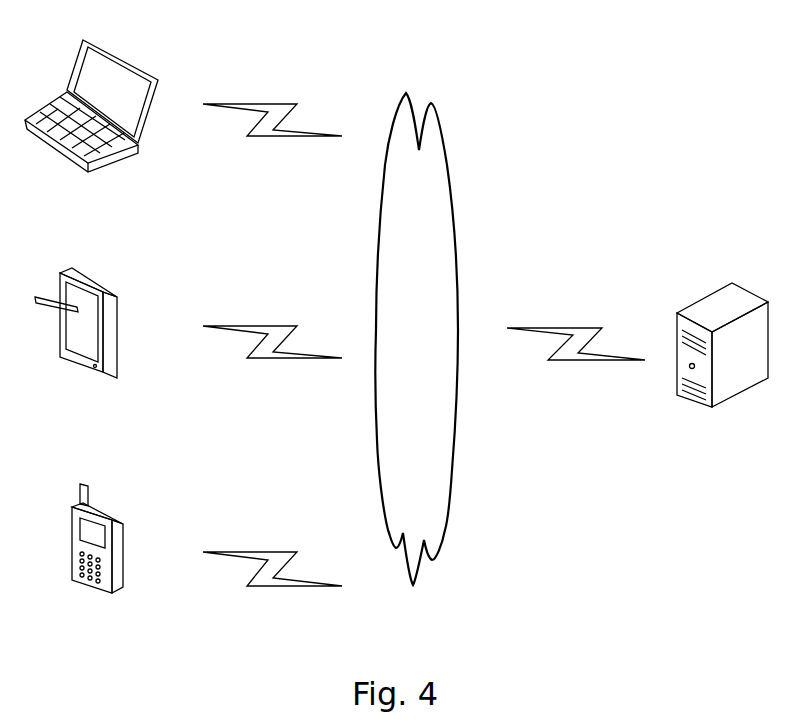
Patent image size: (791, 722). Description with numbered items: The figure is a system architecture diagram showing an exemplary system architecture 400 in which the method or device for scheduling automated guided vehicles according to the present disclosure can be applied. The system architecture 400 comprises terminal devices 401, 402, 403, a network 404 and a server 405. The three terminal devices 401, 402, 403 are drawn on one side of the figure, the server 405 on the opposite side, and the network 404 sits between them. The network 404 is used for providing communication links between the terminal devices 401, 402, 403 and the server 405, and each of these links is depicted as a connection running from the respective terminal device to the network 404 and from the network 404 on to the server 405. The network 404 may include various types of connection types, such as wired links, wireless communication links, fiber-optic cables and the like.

The system architecture 400 is at (670, 35).
The terminal device 401 is at (97, 558).
The terminal device 402 is at (76, 346).
The terminal device 403 is at (91, 123).
The network 404 is at (416, 339).
The server 405 is at (722, 367).